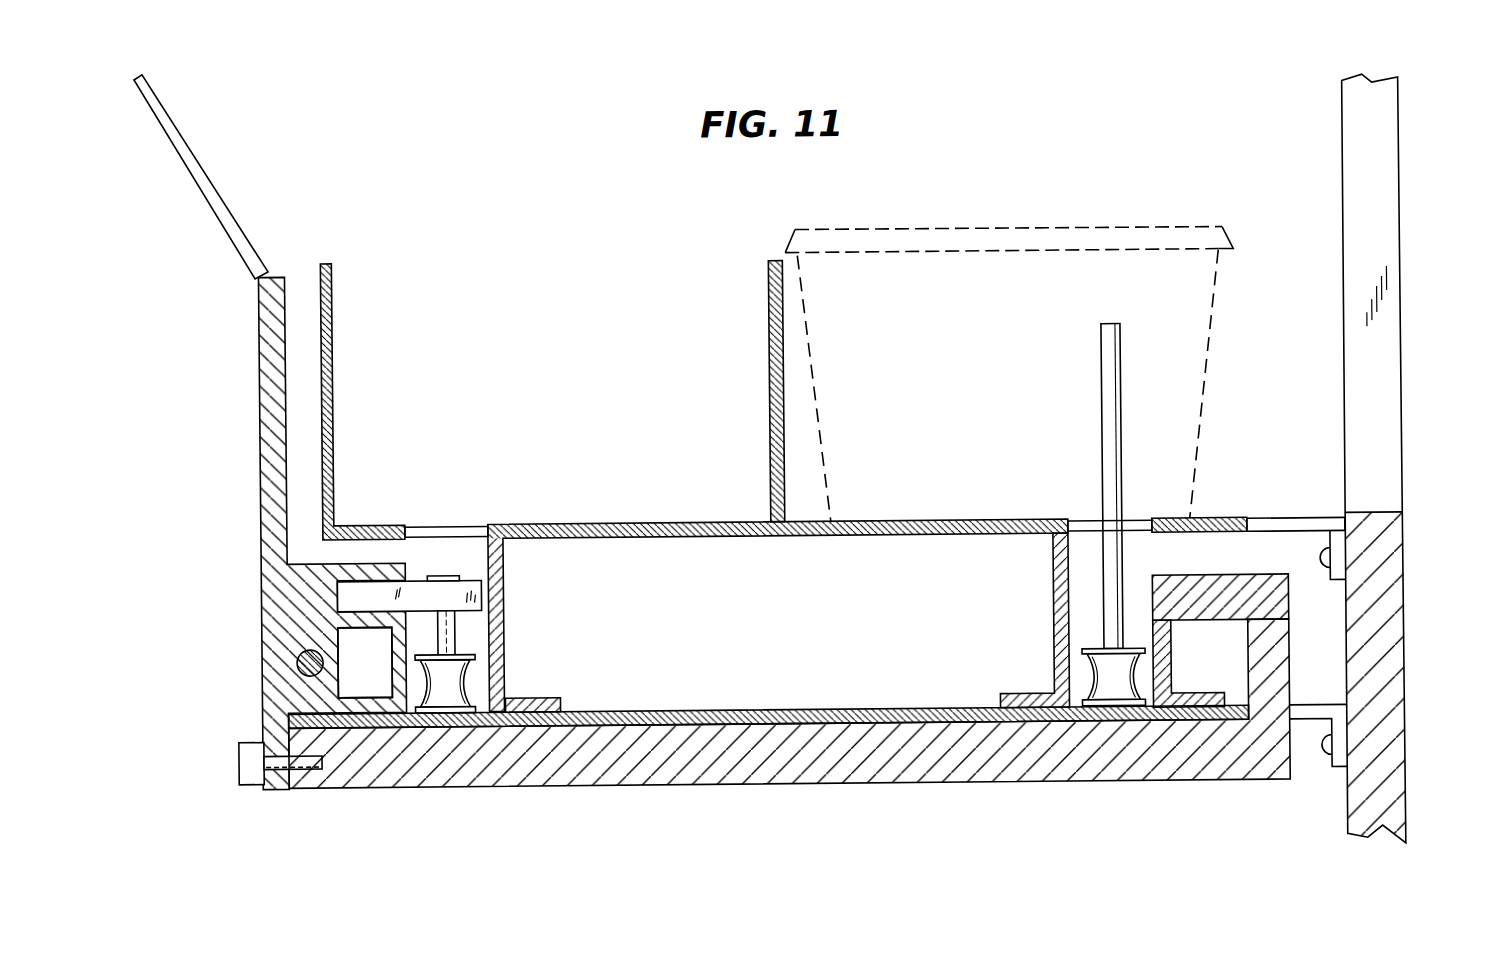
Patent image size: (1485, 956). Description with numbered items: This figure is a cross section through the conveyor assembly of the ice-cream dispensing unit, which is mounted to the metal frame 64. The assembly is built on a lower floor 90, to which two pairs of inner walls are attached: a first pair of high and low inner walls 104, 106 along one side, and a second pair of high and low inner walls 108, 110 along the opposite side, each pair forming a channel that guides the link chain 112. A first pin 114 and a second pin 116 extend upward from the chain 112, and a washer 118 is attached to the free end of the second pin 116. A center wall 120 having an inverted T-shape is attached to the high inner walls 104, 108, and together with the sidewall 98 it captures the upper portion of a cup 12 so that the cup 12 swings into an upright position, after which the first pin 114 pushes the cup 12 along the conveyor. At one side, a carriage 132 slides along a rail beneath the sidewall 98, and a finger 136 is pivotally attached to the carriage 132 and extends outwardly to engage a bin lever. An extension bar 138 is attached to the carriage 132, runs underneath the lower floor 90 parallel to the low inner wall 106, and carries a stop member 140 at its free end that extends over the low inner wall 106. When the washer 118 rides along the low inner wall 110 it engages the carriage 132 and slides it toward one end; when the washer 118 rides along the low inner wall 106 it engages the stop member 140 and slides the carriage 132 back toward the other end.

The cup 12 is at (1010, 222).
The metal frame 64 is at (1378, 93).
The lower floor 90 is at (893, 714).
The sidewall 98 is at (343, 362).
The high inner wall 104 is at (1054, 611).
The low inner wall 106 is at (1168, 670).
The high inner wall 108 is at (505, 589).
The low inner wall 110 is at (388, 674).
The link chain 112 is at (470, 682).
The first pin 114 is at (1106, 353).
The second pin 116 is at (443, 631).
The washer 118 is at (357, 588).
The center wall 120 is at (772, 325).
The carriage 132 is at (262, 428).
The finger 136 is at (191, 133).
The extension bar 138 is at (908, 768).
The stop member 140 is at (1195, 588).